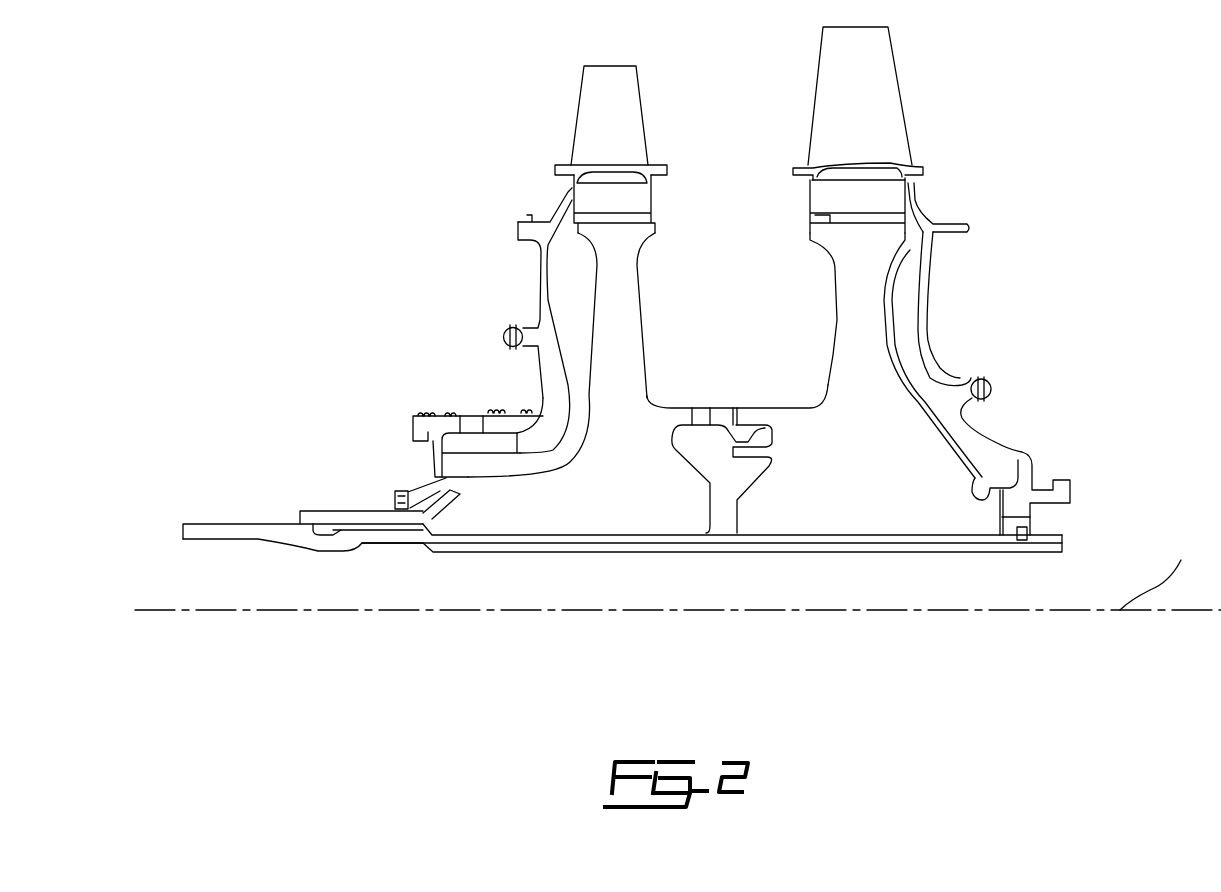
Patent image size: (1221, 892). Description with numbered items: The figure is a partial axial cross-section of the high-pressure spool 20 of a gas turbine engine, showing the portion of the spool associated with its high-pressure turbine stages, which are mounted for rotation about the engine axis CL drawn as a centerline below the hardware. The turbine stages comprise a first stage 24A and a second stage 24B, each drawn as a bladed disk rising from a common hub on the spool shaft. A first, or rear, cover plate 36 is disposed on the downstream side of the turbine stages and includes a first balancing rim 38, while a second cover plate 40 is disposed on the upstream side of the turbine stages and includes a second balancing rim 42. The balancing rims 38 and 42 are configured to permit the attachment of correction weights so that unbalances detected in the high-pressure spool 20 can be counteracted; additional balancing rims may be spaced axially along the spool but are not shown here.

The high-pressure spool 20 is at (306, 347).
The first stage 24A is at (642, 345).
The second stage 24B is at (840, 365).
The first cover plate 36 is at (927, 290).
The first balancing rim 38 is at (991, 380).
The second cover plate 40 is at (537, 274).
The second balancing rim 42 is at (505, 331).